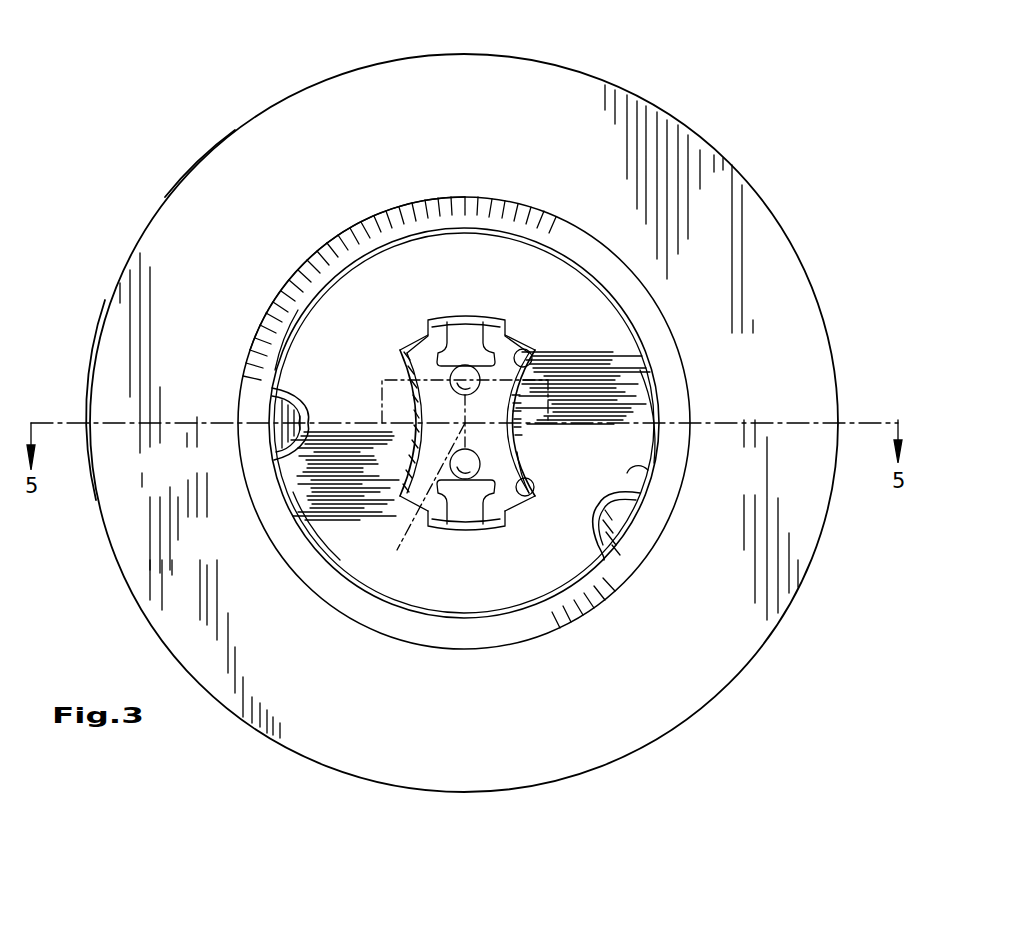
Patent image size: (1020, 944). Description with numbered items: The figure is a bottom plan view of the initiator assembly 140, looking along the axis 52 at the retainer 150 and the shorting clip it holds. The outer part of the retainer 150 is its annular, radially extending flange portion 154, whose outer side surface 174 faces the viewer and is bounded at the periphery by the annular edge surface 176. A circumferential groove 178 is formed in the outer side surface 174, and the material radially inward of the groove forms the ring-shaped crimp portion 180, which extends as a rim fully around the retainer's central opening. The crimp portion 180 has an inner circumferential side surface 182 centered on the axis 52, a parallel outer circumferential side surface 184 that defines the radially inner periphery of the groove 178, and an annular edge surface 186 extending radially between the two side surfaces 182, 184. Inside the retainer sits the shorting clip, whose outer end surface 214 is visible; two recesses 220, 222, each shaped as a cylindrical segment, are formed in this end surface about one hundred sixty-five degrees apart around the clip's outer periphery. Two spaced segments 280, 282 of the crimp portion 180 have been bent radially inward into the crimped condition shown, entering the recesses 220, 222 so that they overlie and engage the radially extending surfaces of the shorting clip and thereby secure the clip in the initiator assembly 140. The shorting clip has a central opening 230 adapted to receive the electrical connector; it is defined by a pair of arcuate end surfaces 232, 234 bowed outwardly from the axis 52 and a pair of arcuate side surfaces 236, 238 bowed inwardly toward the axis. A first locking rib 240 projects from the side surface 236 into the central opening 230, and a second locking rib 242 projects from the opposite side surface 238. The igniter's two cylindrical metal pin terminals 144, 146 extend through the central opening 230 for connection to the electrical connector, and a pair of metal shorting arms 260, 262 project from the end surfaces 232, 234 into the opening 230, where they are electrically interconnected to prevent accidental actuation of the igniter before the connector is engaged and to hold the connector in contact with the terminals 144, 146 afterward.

The initiator assembly 140 is at (738, 110).
The retainer 150 is at (160, 193).
The flange portion 154 is at (105, 300).
The outer side surface 174 is at (137, 515).
The annular edge surface 176 is at (130, 592).
The circumferential groove 178 is at (476, 207).
The outer circumferential side surface 184 is at (381, 224).
The annular edge surface 186 is at (302, 281).
The inner circumferential side surface 182 is at (303, 330).
The crimp portion 180 is at (270, 368).
The outer end surface 214 is at (508, 262).
The recess 220 is at (293, 492).
The recess 222 is at (640, 463).
The segment 280 is at (283, 437).
The segment 282 is at (617, 523).
The first locking rib 240 is at (407, 470).
The side surface 236 is at (405, 350).
The side surface 238 is at (530, 353).
The second locking rib 242 is at (513, 407).
The central opening 230 is at (518, 455).
The terminal 144 is at (412, 345).
The terminal 146 is at (520, 497).
The shorting arm 260 is at (463, 345).
The shorting arm 262 is at (464, 528).
The end surface 232 is at (520, 348).
The end surface 234 is at (528, 488).
The axis 52 is at (423, 500).